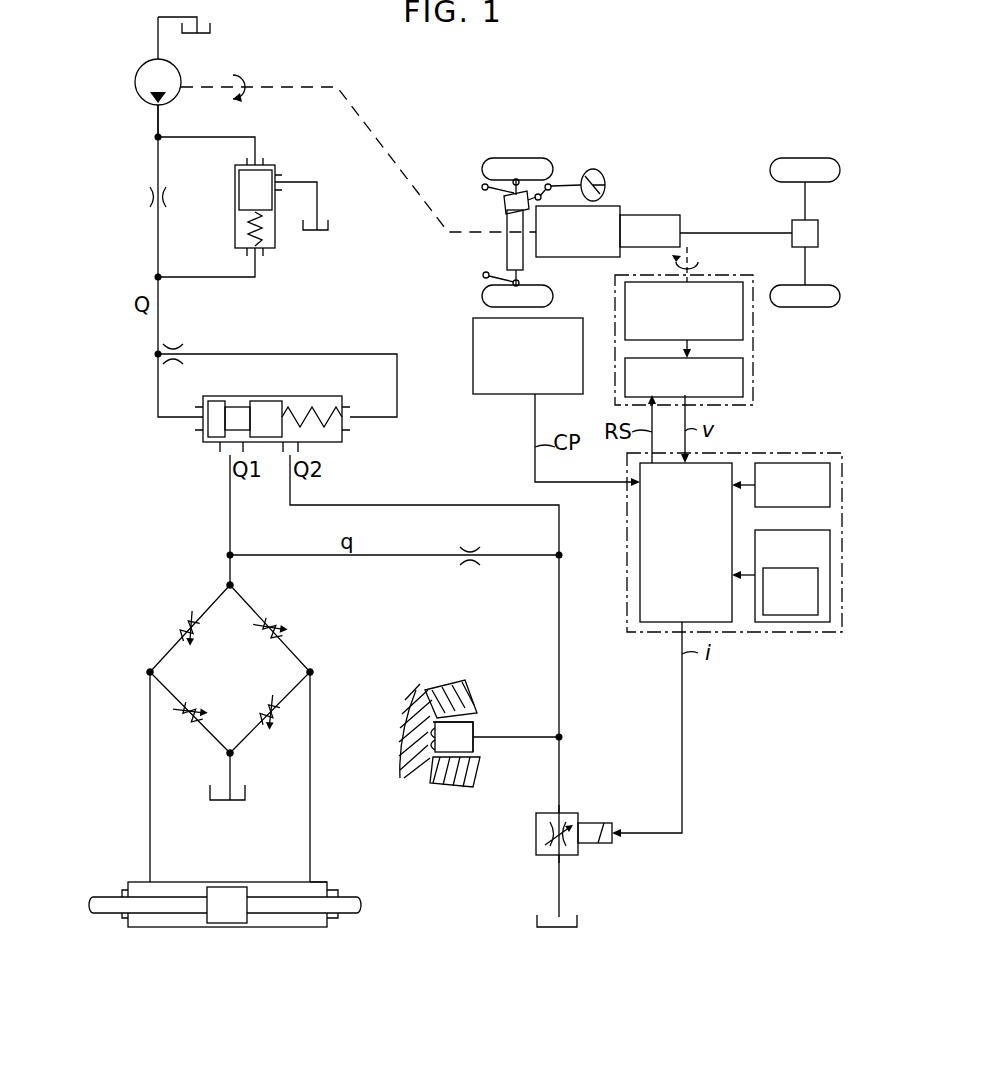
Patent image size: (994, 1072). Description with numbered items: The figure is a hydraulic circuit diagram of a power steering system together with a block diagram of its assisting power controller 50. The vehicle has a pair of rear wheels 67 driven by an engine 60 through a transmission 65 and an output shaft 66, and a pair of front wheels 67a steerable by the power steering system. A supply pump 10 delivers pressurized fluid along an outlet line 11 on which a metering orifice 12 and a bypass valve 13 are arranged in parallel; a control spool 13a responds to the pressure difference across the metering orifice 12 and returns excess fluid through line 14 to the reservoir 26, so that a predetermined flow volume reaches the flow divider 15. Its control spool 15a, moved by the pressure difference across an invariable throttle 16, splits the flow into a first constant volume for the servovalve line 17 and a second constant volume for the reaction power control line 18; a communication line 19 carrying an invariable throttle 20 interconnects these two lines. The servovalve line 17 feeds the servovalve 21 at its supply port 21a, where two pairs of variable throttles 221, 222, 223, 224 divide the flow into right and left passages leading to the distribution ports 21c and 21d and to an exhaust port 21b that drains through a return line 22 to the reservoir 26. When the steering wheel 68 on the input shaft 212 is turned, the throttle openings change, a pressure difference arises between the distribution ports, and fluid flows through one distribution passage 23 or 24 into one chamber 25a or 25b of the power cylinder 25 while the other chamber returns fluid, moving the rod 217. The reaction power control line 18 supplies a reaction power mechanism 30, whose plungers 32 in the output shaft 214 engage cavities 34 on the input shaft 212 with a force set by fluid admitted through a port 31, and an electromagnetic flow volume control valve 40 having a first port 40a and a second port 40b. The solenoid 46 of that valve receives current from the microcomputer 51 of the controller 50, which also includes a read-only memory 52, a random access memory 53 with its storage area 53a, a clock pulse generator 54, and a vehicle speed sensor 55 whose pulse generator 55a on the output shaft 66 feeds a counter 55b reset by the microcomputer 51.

The supply pump 10 is at (180, 72).
The outlet line 11 is at (156, 117).
The metering orifice 12 is at (150, 197).
The bypass valve 13 is at (236, 193).
The control spool 13a is at (268, 172).
The return passage 14 is at (317, 200).
The flow divider 15 is at (296, 396).
The control spool 15a is at (260, 410).
The invariable throttle 16 is at (176, 346).
The servovalve line 17 is at (230, 505).
The reaction power control line 18 is at (493, 505).
The communication line 19 is at (406, 560).
The invariable throttle 20 is at (470, 563).
The servovalve 21 is at (153, 632).
The supply port 21a is at (232, 585).
The exhaust port 21b is at (232, 754).
The distribution port 21c is at (150, 672).
The distribution port 21d is at (312, 672).
The variable throttle 221 is at (280, 628).
The variable throttle 222 is at (195, 712).
The variable throttle 223 is at (190, 618).
The variable throttle 224 is at (268, 712).
The return line 22 is at (228, 772).
The distribution passage 23 is at (150, 792).
The distribution passage 24 is at (311, 818).
The power cylinder 25 is at (278, 928).
The chamber 25a is at (321, 924).
The chamber 25b is at (184, 922).
The rod 217 is at (121, 905).
The reservoir 26 is at (210, 30).
The reaction power mechanism 30 is at (475, 778).
The port 31 is at (518, 740).
The plunger 32 is at (457, 748).
The cavity 34 is at (430, 748).
The input shaft 212 is at (410, 708).
The output shaft 214 is at (472, 700).
The electromagnetic flow volume control valve 40 is at (537, 840).
The first port 40a is at (557, 813).
The second port 40b is at (557, 855).
The solenoid 46 is at (600, 823).
The assisting power controller 50 is at (730, 452).
The microcomputer (CPU) 51 is at (640, 545).
The read-only memory (ROM) 52 is at (807, 460).
The random access memory (RAM) 53 is at (763, 610).
The data storage area 53a is at (800, 615).
The clock pulse generator 54 is at (473, 330).
The vehicle speed sensor 55 is at (615, 293).
The pulse generator 55a is at (738, 330).
The counter 55b is at (737, 387).
The engine 60 is at (613, 207).
The transmission 65 is at (660, 215).
The output shaft 66 is at (738, 230).
The rear wheels 67 is at (807, 300).
The front wheels 67a is at (514, 163).
The steering wheel 68 is at (593, 168).